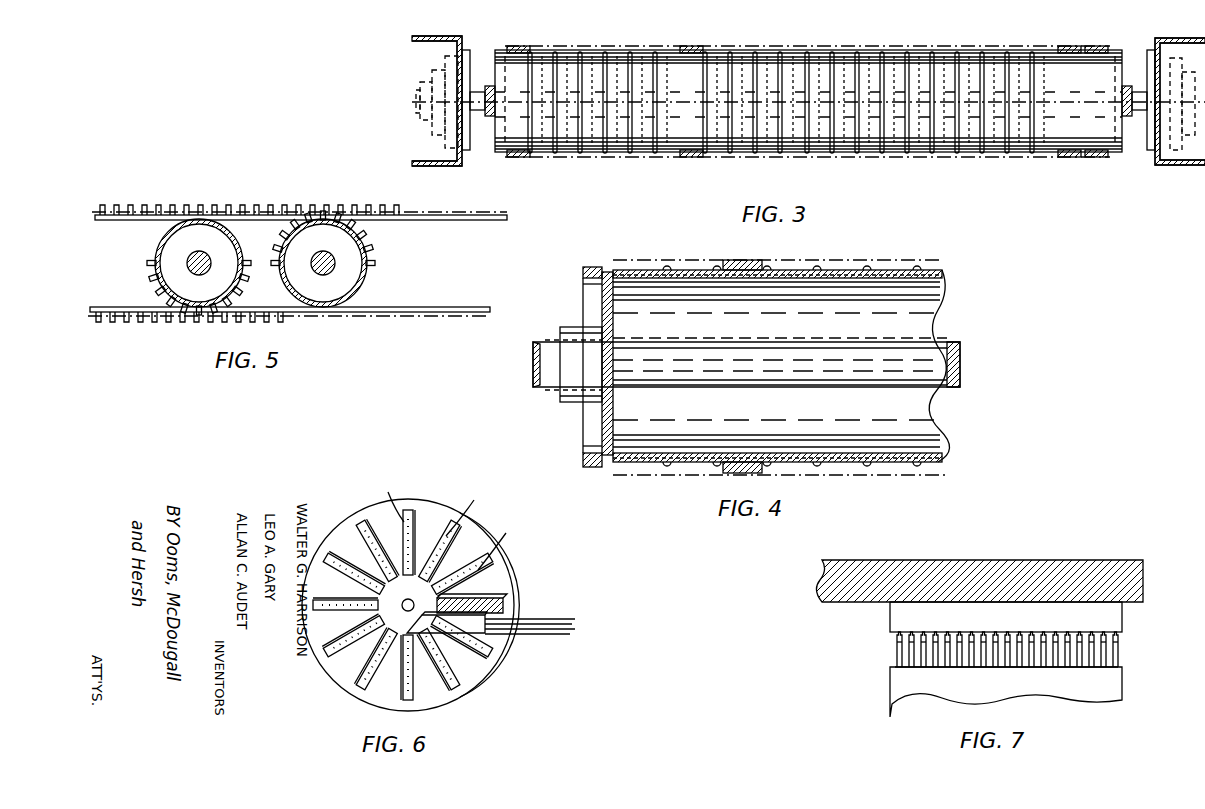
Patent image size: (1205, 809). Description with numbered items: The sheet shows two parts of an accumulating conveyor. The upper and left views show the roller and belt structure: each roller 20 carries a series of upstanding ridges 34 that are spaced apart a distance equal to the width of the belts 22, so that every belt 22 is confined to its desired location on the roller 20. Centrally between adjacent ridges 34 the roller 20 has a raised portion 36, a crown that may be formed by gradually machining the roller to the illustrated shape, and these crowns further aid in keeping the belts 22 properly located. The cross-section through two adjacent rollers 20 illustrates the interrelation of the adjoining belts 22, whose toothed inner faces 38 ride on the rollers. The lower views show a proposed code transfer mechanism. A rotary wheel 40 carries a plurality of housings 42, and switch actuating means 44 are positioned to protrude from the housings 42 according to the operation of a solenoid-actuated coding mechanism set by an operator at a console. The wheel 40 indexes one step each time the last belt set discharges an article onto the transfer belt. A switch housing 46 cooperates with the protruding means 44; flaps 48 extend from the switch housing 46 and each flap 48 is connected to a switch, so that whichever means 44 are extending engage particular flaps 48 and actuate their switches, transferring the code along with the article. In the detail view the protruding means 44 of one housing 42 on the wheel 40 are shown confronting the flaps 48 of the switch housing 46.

In FIG. 3, the roller 20 is at (840, 60).
In FIG. 5, the roller 20 is at (290, 246).
In FIG. 4, the roller 20 is at (928, 320).
In FIG. 3, the belt 22 is at (692, 47).
In FIG. 5, the belt 22 is at (440, 215).
In FIG. 4, the belt 22 is at (750, 262).
In FIG. 3, the upstanding ridge 34 is at (605, 50).
In FIG. 4, the upstanding ridge 34 is at (768, 268).
In FIG. 3, the raised portion 36 is at (643, 152).
In FIG. 4, the raised portion 36 is at (868, 268).
In FIG. 5, the rack teeth 38 is at (218, 212).
In FIG. 6, the rotary wheel 40 is at (343, 540).
In FIG. 7, the rotary wheel 40 is at (1020, 560).
In FIG. 6, the housing 42 is at (343, 640).
In FIG. 7, the housing 42 is at (900, 617).
In FIG. 6, the switch actuating means 44 is at (418, 520).
In FIG. 7, the switch actuating means 44 is at (1100, 640).
In FIG. 6, the switch housing 46 is at (450, 636).
In FIG. 7, the switch housing 46 is at (900, 695).
In FIG. 6, the flap 48 is at (500, 608).
In FIG. 7, the flap 48 is at (1118, 658).